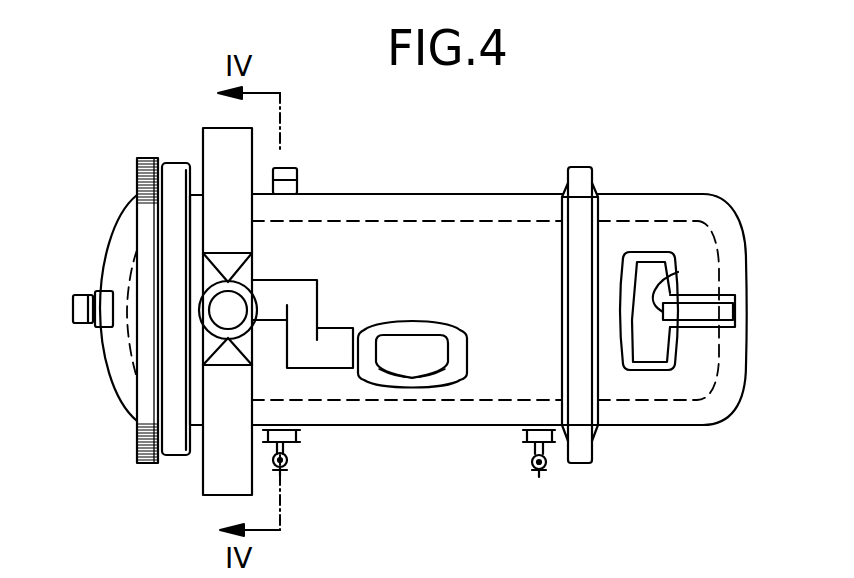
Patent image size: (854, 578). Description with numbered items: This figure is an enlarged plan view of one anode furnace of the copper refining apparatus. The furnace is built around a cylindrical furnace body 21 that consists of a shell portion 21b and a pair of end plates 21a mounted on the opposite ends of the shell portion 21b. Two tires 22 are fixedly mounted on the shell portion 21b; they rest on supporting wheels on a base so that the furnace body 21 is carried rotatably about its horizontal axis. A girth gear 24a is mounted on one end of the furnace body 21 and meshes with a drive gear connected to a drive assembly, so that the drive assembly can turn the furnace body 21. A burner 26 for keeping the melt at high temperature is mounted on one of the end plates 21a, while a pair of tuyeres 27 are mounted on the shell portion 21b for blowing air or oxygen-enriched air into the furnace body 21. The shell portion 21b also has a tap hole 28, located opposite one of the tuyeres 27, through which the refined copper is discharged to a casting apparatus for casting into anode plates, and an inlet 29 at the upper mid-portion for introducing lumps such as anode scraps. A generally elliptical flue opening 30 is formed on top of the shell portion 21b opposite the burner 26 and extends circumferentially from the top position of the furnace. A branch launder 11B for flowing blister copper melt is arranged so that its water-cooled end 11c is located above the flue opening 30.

The cylindrical furnace body 21 is at (430, 307).
The end plates 21a is at (110, 228).
The shell portion 21b is at (451, 194).
The tires 22 is at (177, 160).
The girth gear 24a is at (147, 157).
The burner 26 is at (73, 296).
The tuyeres 27 is at (290, 462).
The tap hole 28 is at (297, 177).
The inlet 29 is at (403, 384).
The flue opening 30 is at (650, 270).
The branch launder 11B is at (712, 294).
The end of the launder 11c is at (678, 272).